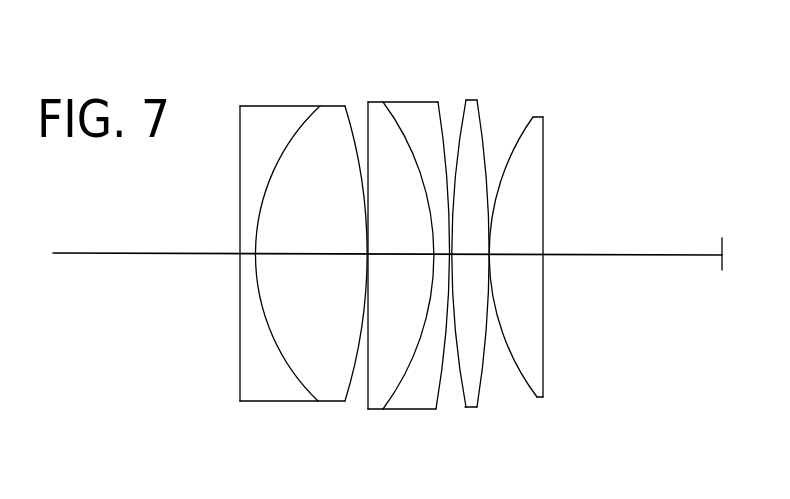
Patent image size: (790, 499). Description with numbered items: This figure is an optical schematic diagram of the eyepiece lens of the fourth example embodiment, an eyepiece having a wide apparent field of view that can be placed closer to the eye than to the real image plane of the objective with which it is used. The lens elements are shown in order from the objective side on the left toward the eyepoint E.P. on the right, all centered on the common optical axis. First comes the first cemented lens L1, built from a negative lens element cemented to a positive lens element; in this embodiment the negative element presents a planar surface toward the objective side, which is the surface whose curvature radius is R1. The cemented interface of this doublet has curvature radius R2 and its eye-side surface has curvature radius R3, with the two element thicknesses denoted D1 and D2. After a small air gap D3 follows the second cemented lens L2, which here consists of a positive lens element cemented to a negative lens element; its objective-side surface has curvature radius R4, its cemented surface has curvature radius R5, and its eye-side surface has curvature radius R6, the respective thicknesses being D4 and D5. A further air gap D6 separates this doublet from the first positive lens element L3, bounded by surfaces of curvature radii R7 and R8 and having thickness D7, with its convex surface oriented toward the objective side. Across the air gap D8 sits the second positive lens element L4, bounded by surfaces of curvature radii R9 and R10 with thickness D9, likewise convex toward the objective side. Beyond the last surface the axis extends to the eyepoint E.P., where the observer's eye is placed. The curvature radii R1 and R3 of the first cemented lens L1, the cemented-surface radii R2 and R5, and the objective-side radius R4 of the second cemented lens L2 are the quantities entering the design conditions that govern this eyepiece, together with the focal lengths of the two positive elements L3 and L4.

The curvature radius of the lens surface closest to the objective side in the first R1 is at (240, 127).
The curvature radius of the cemented surface of the first cemented lens R2 is at (297, 133).
The curvature radius of the lens surface closest to the eye side in the first cement R3 is at (350, 127).
The curvature radius of the lens surface of the second cemented lens closest to the R4 is at (368, 120).
The curvature radius of the cemented surface of the second cemented lens R5 is at (394, 114).
The curvature radius of lens surface R6 is at (437, 120).
The curvature radius of lens surface R7 is at (461, 127).
The curvature radius of lens surface R8 is at (480, 122).
The curvature radius of lens surface R9 is at (524, 124).
The curvature radius of lens surface R10 is at (543, 132).
The interfacial distance D1 is at (248, 253).
The interfacial distance D2 is at (306, 253).
The interfacial distance D3 is at (365, 255).
The interfacial distance D4 is at (385, 253).
The interfacial distance D5 is at (441, 255).
The interfacial distance D6 is at (452, 255).
The interfacial distance D7 is at (465, 253).
The interfacial distance D8 is at (491, 255).
The interfacial distance D9 is at (518, 253).
The first cemented lens L1 is at (355, 432).
The second cemented lens L2 is at (448, 432).
The first positive lens element L3 is at (470, 410).
The second positive lens element L4 is at (540, 398).
The eyepoint E.P. is at (722, 239).